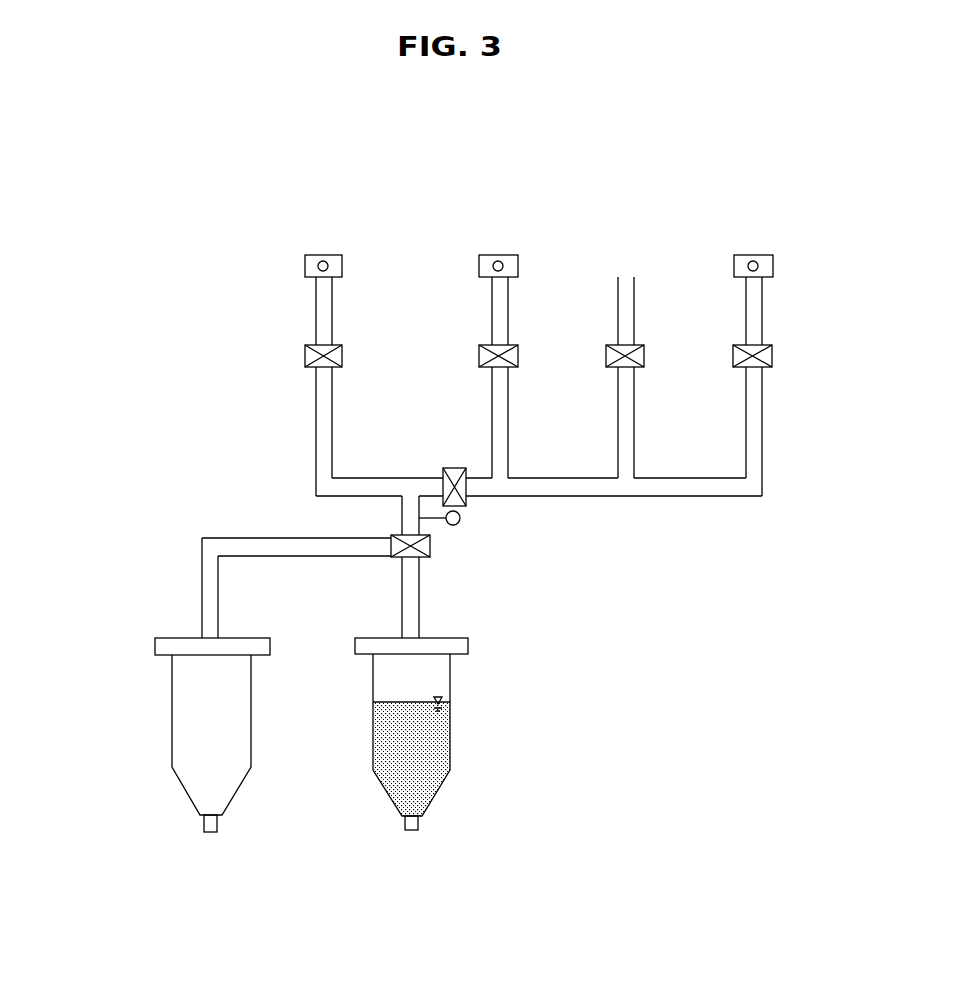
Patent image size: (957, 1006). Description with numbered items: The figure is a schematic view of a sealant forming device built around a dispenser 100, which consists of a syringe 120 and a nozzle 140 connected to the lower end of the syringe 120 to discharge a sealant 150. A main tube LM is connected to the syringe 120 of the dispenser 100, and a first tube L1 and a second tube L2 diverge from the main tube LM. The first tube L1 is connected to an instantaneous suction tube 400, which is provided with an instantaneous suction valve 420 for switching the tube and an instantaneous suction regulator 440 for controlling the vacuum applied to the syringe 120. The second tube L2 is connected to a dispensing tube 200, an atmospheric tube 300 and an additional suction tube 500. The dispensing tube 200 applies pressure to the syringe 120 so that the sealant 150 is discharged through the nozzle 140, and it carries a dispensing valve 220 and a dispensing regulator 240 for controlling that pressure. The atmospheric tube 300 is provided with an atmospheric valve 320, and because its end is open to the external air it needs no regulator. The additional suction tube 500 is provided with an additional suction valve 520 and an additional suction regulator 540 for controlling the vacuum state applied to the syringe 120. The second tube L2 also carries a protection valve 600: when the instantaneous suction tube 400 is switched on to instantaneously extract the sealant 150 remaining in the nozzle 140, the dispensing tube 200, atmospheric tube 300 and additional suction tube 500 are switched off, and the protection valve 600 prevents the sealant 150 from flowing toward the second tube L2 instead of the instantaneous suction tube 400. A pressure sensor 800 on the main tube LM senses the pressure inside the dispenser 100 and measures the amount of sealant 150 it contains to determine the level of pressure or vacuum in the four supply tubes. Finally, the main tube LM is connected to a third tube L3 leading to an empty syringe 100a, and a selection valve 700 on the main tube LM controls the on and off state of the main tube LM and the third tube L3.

The dispenser 100 is at (553, 710).
The empty syringe 100a is at (152, 727).
The syringe 120 is at (450, 690).
The nozzle 140 is at (418, 822).
The sealant 150 is at (441, 741).
The dispensing tube 200 is at (492, 398).
The dispensing valve 220 is at (479, 356).
The dispensing regulator 240 is at (479, 266).
The atmospheric tube 300 is at (618, 400).
The atmospheric valve 320 is at (606, 356).
The instantaneous suction tube 400 is at (316, 400).
The instantaneous suction valve 420 is at (305, 356).
The instantaneous suction regulator 440 is at (305, 266).
The additional suction tube 500 is at (746, 400).
The additional suction valve 520 is at (733, 356).
The additional suction regulator 540 is at (734, 266).
The protection valve 600 is at (459, 468).
The selection valve 700 is at (430, 546).
The pressure sensor 800 is at (460, 518).
The first tube L1 is at (359, 478).
The second tube L2 is at (612, 498).
The third tube L3 is at (282, 538).
The main tube LM is at (420, 621).